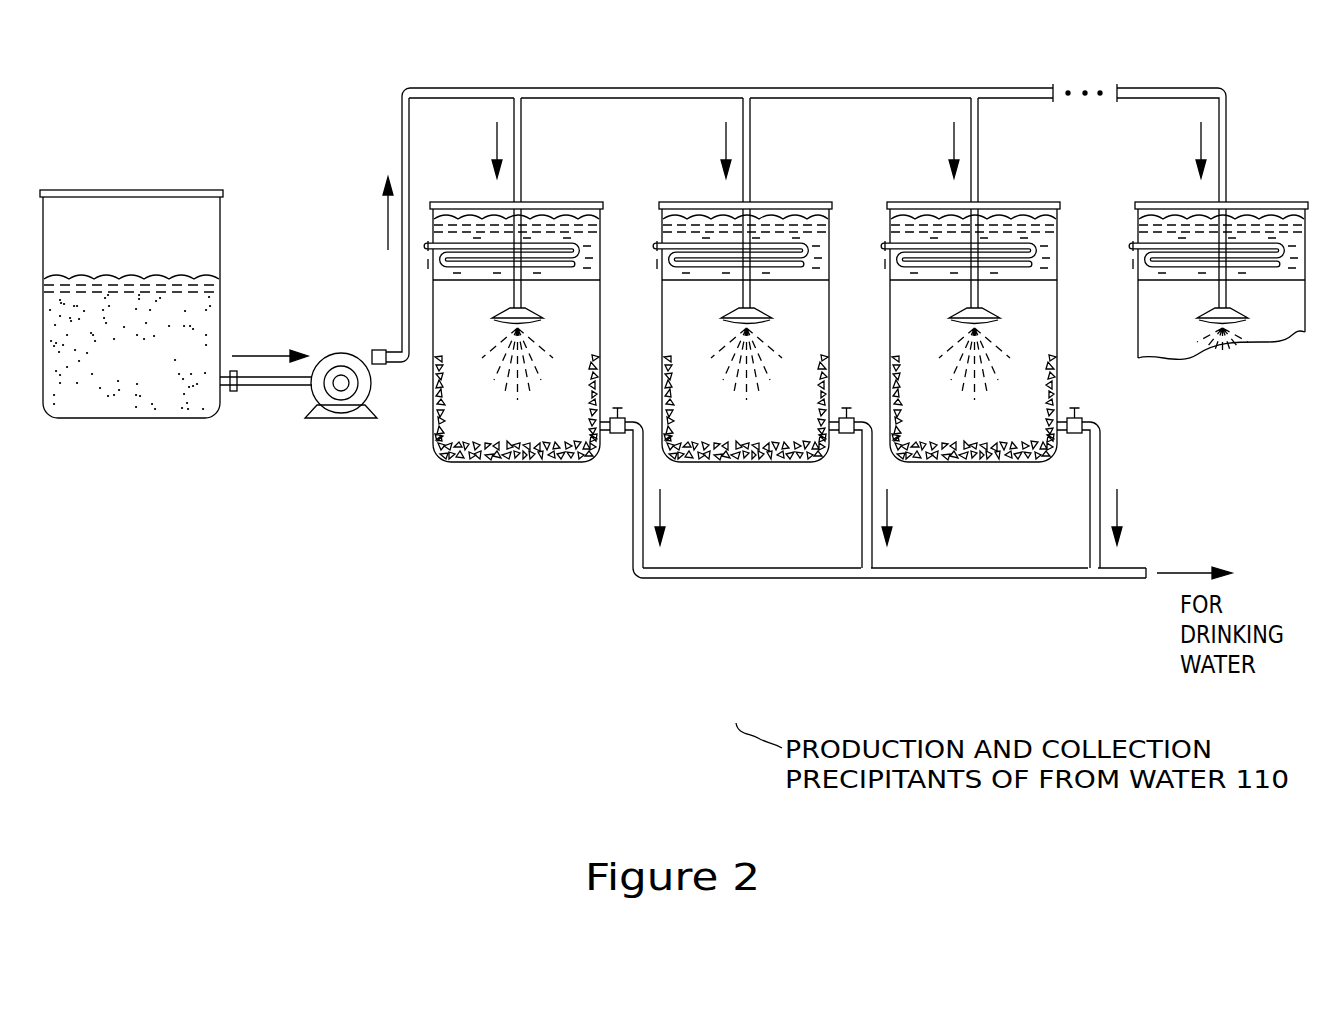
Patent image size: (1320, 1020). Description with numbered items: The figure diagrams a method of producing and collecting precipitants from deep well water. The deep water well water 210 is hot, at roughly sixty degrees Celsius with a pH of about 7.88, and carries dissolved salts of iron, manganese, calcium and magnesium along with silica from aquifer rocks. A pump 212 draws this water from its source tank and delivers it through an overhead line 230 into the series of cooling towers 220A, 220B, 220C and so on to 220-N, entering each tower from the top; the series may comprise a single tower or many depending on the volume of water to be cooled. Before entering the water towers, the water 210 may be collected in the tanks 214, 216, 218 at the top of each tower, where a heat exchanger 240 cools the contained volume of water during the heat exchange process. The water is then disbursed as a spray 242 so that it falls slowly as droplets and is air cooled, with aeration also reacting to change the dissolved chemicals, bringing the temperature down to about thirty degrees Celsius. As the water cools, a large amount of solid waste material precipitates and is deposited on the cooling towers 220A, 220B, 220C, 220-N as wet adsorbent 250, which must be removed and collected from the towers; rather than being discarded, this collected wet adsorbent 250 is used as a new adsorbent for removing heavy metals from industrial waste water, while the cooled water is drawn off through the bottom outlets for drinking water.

The deep water well water 210 is at (123, 418).
The pump 212 is at (330, 352).
The tank 214 is at (598, 226).
The tank 216 is at (828, 226).
The tank 218 is at (1055, 226).
The cooling tower 220A is at (510, 462).
The cooling tower 220B is at (785, 462).
The cooling tower 220C is at (1020, 462).
The cooling tower 220-N is at (1152, 356).
The distribution manifold pipe 230 is at (790, 90).
The heat exchanger 240 is at (428, 265).
The spray 242 is at (540, 320).
The wet adsorbent 250 is at (433, 424).